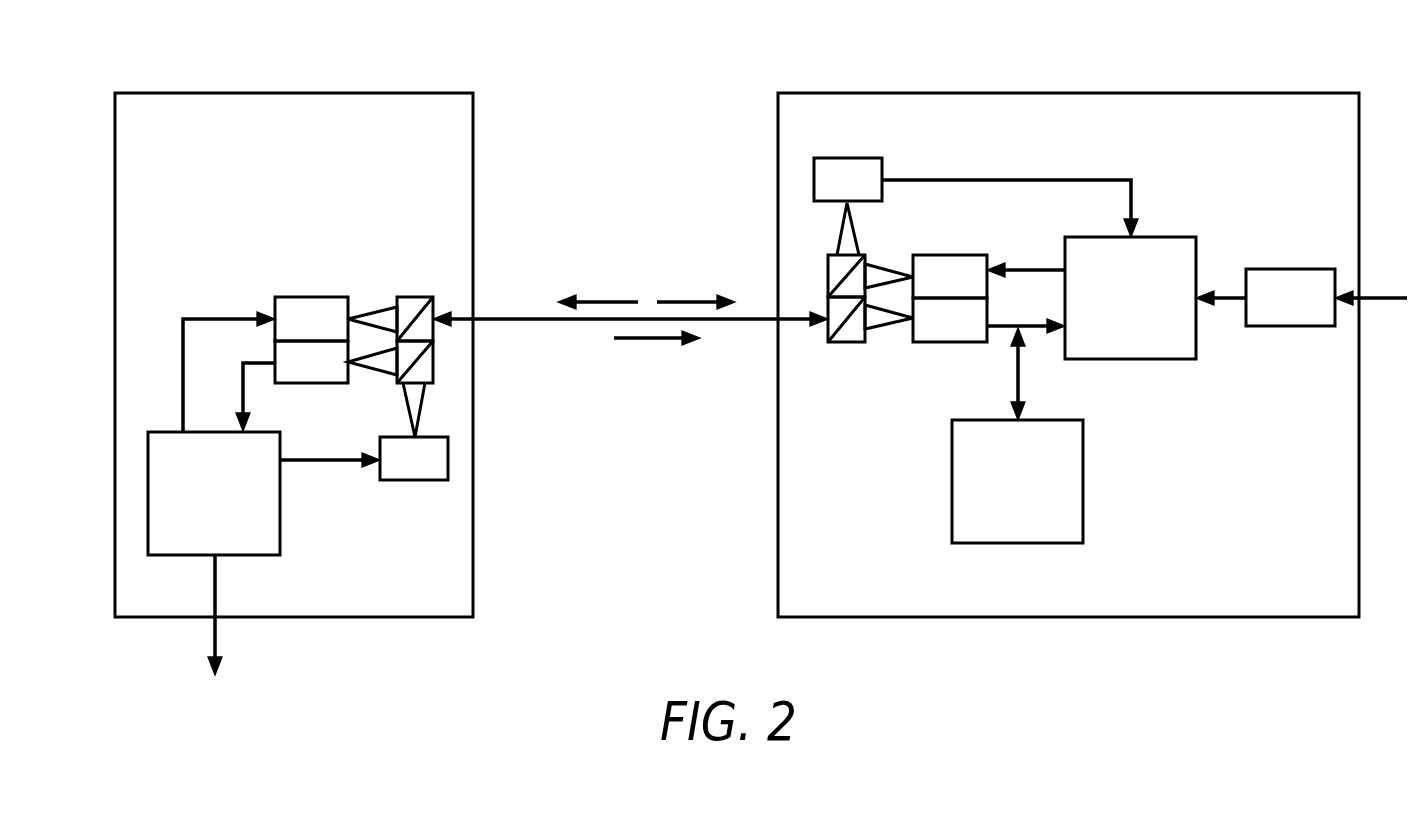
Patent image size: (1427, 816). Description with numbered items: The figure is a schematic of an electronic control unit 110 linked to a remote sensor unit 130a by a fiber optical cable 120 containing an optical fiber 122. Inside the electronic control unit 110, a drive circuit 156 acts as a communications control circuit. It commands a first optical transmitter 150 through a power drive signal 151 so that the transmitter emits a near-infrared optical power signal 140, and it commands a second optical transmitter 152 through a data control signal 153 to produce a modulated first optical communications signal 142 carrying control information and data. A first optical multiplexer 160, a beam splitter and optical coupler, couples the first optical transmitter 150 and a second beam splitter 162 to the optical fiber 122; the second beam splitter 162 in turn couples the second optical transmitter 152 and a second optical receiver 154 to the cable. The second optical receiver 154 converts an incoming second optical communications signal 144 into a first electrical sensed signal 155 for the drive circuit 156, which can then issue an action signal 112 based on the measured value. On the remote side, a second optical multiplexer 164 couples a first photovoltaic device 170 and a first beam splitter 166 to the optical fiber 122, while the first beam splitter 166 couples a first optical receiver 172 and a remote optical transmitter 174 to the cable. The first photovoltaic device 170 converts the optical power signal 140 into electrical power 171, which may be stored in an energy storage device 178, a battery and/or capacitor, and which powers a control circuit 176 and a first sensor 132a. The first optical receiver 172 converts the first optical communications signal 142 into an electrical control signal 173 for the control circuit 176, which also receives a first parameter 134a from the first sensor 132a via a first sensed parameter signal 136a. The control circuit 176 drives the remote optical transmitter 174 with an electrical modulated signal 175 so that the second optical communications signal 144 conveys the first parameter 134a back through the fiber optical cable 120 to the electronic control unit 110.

The electronic control unit 110 is at (175, 93).
The action signal 112 is at (215, 635).
The fiber optical cable 120 is at (630, 352).
The optical fiber 122 is at (525, 321).
The sensor unit 130a is at (853, 93).
The first sensor 132a is at (1283, 269).
The first parameter 134a is at (1380, 298).
The first sensed parameter signal 136a is at (1221, 300).
The optical power signal 140 is at (675, 369).
The first optical communications signal 142 is at (705, 297).
The second optical communications signal 144 is at (635, 297).
The first optical transmitter 150 is at (303, 297).
The power drive signal 151 is at (222, 318).
The second optical transmitter 152 is at (413, 480).
The data control signal 153 is at (323, 460).
The second optical receiver 154 is at (313, 383).
The first electrical sensed signal 155 is at (242, 402).
The drive circuit 156 is at (280, 528).
The first optical multiplexer 160 is at (412, 297).
The second beam splitter 162 is at (433, 355).
The second optical multiplexer 164 is at (848, 342).
The first beam splitter 166 is at (828, 279).
The first photovoltaic device 170 is at (948, 342).
The electrical power 171 is at (1046, 317).
The first optical receiver 172 is at (847, 158).
The electrical control signal 173 is at (960, 179).
The remote optical transmitter 174 is at (950, 255).
The electrical modulated signal 175 is at (1032, 270).
The control circuit 176 is at (1162, 237).
The energy storage device 178 is at (952, 468).